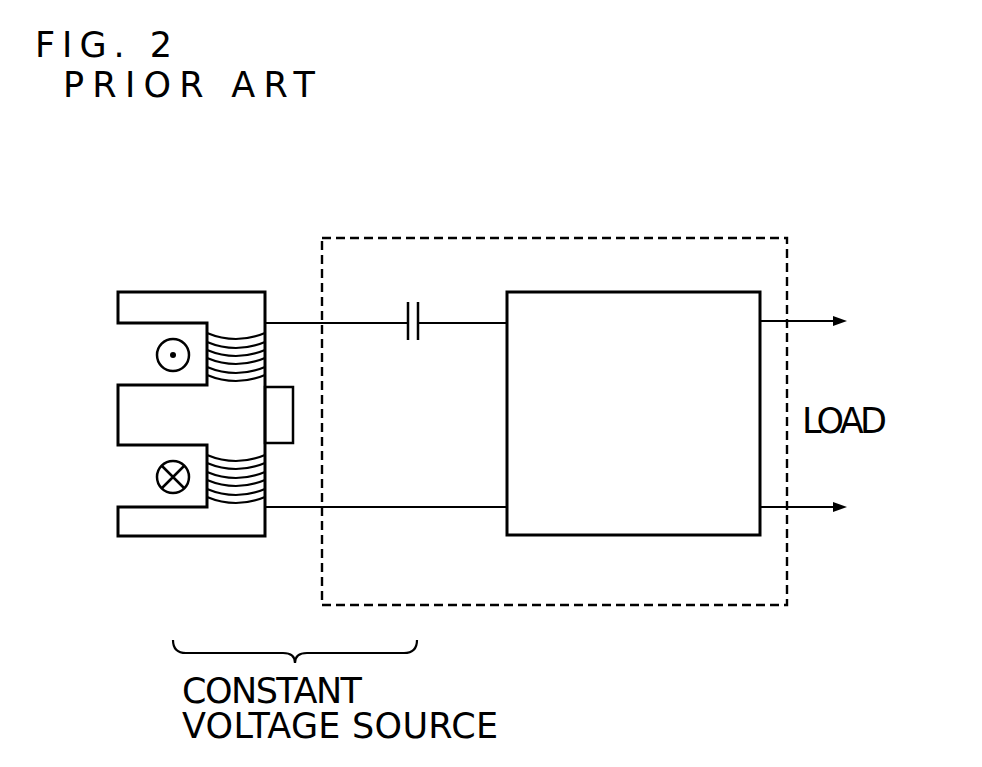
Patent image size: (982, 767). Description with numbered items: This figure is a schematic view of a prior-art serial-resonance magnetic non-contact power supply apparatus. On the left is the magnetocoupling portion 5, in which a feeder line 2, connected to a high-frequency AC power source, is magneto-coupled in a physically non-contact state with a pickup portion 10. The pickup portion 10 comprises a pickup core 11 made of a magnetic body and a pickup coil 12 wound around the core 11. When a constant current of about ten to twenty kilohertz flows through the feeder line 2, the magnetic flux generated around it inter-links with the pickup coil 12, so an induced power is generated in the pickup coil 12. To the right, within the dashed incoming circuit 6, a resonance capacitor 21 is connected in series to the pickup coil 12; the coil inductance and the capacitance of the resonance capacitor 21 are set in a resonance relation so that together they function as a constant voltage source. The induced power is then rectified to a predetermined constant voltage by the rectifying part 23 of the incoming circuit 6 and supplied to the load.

The feeder line 2 is at (157, 477).
The magnetocoupling portion 5 is at (201, 389).
The incoming circuit 6 is at (462, 237).
The pickup portion 10 is at (259, 281).
The pickup core 11 is at (222, 298).
The pickup coil 12 is at (233, 500).
The resonance capacitor 21 is at (413, 300).
The rectifying part 23 is at (673, 292).